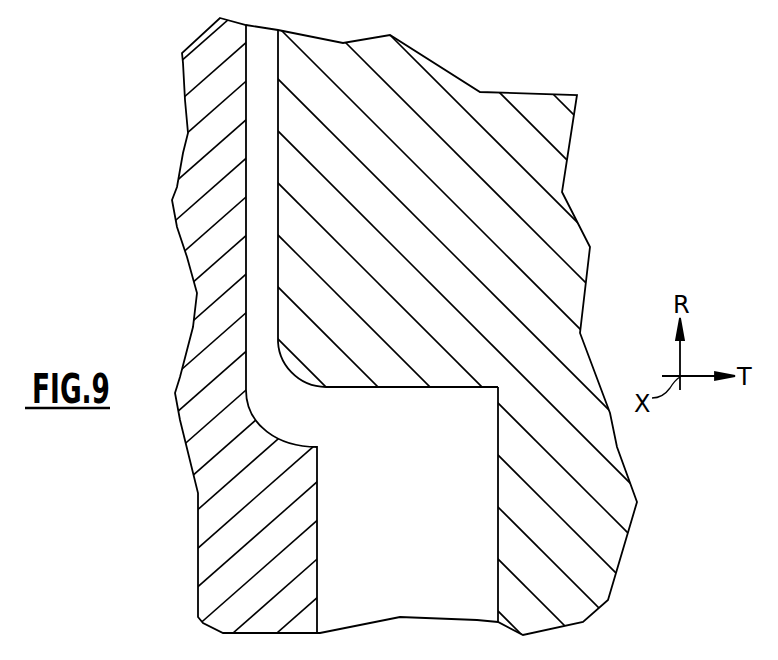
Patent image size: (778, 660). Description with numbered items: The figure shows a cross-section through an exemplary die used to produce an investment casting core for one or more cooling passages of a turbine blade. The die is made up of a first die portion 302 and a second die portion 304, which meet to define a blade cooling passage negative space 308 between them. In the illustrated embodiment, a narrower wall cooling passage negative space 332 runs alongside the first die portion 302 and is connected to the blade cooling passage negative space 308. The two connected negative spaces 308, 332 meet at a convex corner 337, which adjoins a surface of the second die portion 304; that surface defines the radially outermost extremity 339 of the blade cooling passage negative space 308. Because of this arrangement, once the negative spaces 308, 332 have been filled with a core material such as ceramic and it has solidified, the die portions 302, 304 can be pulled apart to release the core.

The first die portion 302 is at (317, 573).
The second die portion 304 is at (498, 593).
The blade cooling passage negative space 308 is at (436, 520).
The wall cooling passage negative space 332 is at (262, 301).
The convex corner 337 is at (317, 388).
The radially outermost extremity 339 is at (440, 388).